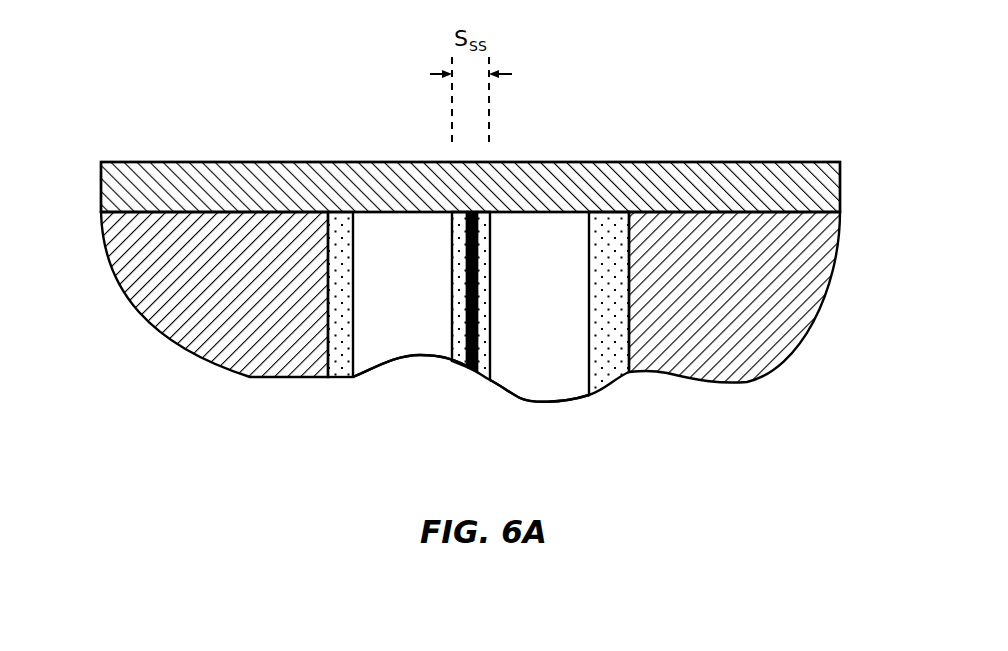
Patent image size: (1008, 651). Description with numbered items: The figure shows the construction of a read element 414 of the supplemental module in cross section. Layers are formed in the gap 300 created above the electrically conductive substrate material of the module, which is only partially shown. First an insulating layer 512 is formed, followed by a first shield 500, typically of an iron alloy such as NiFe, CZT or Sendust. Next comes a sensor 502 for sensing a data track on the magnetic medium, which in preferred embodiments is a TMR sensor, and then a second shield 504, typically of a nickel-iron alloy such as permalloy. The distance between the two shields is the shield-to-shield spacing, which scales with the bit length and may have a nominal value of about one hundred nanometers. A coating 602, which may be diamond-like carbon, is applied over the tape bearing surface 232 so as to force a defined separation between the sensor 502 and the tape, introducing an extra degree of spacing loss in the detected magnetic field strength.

The tape bearing surface 232 is at (170, 134).
The coating 602 is at (712, 162).
The insulating layer 512 is at (222, 378).
The gap 300 is at (338, 380).
The first shield 500 is at (385, 368).
The sensor 502 is at (472, 370).
The second shield 504 is at (558, 404).
The read element 414 is at (628, 418).